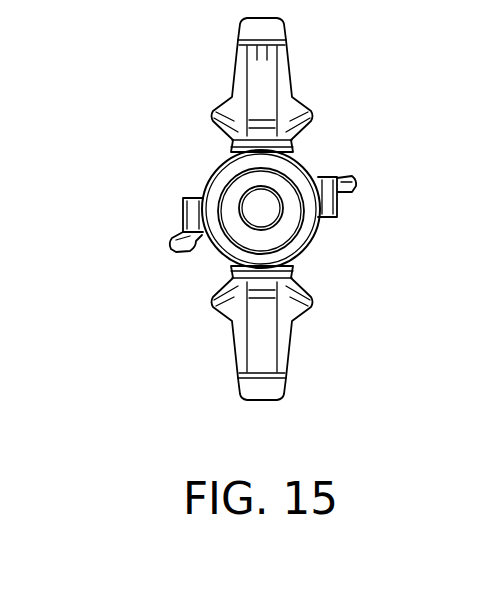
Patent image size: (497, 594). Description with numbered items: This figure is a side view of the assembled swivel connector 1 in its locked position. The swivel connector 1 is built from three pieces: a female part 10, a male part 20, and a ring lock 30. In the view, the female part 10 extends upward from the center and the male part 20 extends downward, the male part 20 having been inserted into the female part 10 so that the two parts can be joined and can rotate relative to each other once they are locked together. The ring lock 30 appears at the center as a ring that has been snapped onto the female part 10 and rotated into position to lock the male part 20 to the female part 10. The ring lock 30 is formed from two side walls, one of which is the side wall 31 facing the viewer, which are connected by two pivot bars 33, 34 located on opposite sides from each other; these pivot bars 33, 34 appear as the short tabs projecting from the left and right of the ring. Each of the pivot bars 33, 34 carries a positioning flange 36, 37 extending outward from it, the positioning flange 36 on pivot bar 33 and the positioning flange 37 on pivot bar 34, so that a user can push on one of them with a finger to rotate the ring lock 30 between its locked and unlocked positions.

The swivel connector 1 is at (100, 206).
The female part 10 is at (283, 66).
The male part 20 is at (240, 343).
The ring lock 30 is at (310, 167).
The side wall 31 is at (270, 212).
The pivot bar 33 is at (200, 197).
The pivot bar 34 is at (338, 212).
The positioning flange 36 is at (180, 247).
The positioning flange 37 is at (353, 188).